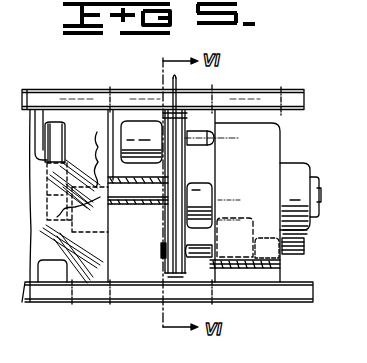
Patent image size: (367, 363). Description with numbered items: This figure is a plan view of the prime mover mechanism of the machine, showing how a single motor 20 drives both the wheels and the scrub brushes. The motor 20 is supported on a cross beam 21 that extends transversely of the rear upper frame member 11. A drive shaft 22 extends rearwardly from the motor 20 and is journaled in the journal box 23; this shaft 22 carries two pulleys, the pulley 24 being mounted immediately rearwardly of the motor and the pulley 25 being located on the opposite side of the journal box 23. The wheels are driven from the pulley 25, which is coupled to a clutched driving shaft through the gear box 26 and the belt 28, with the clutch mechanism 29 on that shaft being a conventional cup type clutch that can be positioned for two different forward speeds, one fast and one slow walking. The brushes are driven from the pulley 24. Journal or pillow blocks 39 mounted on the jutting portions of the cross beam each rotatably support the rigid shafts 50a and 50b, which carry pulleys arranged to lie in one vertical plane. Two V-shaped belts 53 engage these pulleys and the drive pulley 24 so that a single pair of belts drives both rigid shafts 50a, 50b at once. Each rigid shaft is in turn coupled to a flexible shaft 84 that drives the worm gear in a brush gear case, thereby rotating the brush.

The rear upper frame member 11 is at (290, 103).
The motor 20 is at (293, 180).
The cross beam 21 is at (277, 120).
The drive shaft 22 is at (143, 197).
The journal box 23 is at (74, 198).
The pulley 24 is at (165, 200).
The pulley 25 is at (100, 197).
The gear box 26 is at (39, 117).
The belt 28 is at (57, 122).
The clutch mechanism 29 is at (66, 122).
The journal blocks 39 is at (137, 130).
The rigid shaft 50a is at (200, 146).
The rigid shaft 50b is at (266, 242).
The V-shaped belts 53 is at (173, 112).
The flexible shaft 84 is at (287, 246).